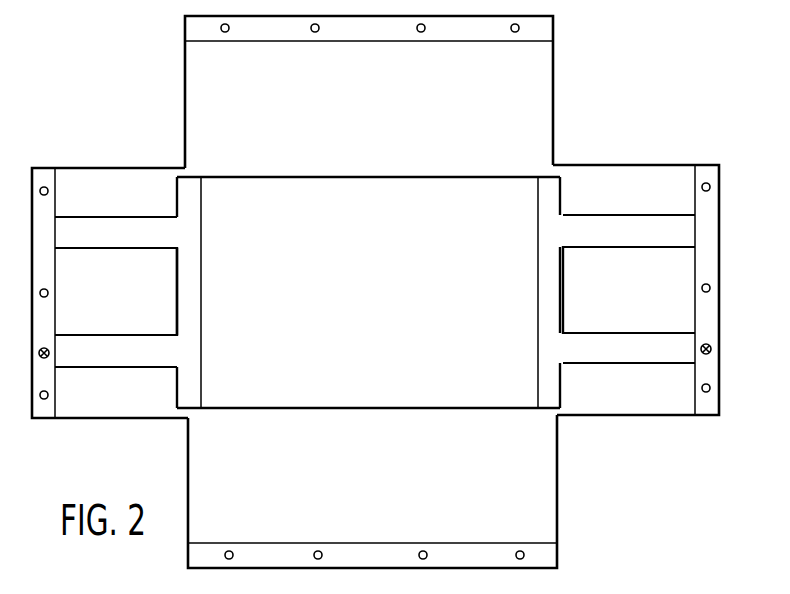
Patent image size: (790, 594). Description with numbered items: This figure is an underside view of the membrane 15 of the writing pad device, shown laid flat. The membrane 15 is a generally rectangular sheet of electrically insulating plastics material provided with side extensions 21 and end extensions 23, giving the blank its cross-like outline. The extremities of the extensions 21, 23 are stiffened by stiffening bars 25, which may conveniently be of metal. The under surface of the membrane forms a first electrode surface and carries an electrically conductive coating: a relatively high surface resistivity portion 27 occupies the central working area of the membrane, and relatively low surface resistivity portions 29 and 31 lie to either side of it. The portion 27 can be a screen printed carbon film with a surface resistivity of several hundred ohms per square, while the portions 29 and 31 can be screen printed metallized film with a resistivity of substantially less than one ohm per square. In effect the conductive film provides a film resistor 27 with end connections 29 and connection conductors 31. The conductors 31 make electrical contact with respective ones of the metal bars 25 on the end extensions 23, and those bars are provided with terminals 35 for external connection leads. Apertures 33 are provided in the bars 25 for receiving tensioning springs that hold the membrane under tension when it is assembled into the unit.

The membrane 15 is at (616, 94).
The side extensions 21 is at (558, 115).
The end extensions 23 is at (632, 180).
The stiffening bars 25 is at (192, 32).
The relatively high surface resistivity portion 27 is at (368, 292).
The end connections 29 is at (202, 278).
The connection conductors 31 is at (122, 236).
The apertures 33 is at (313, 33).
The terminals 35 is at (51, 355).